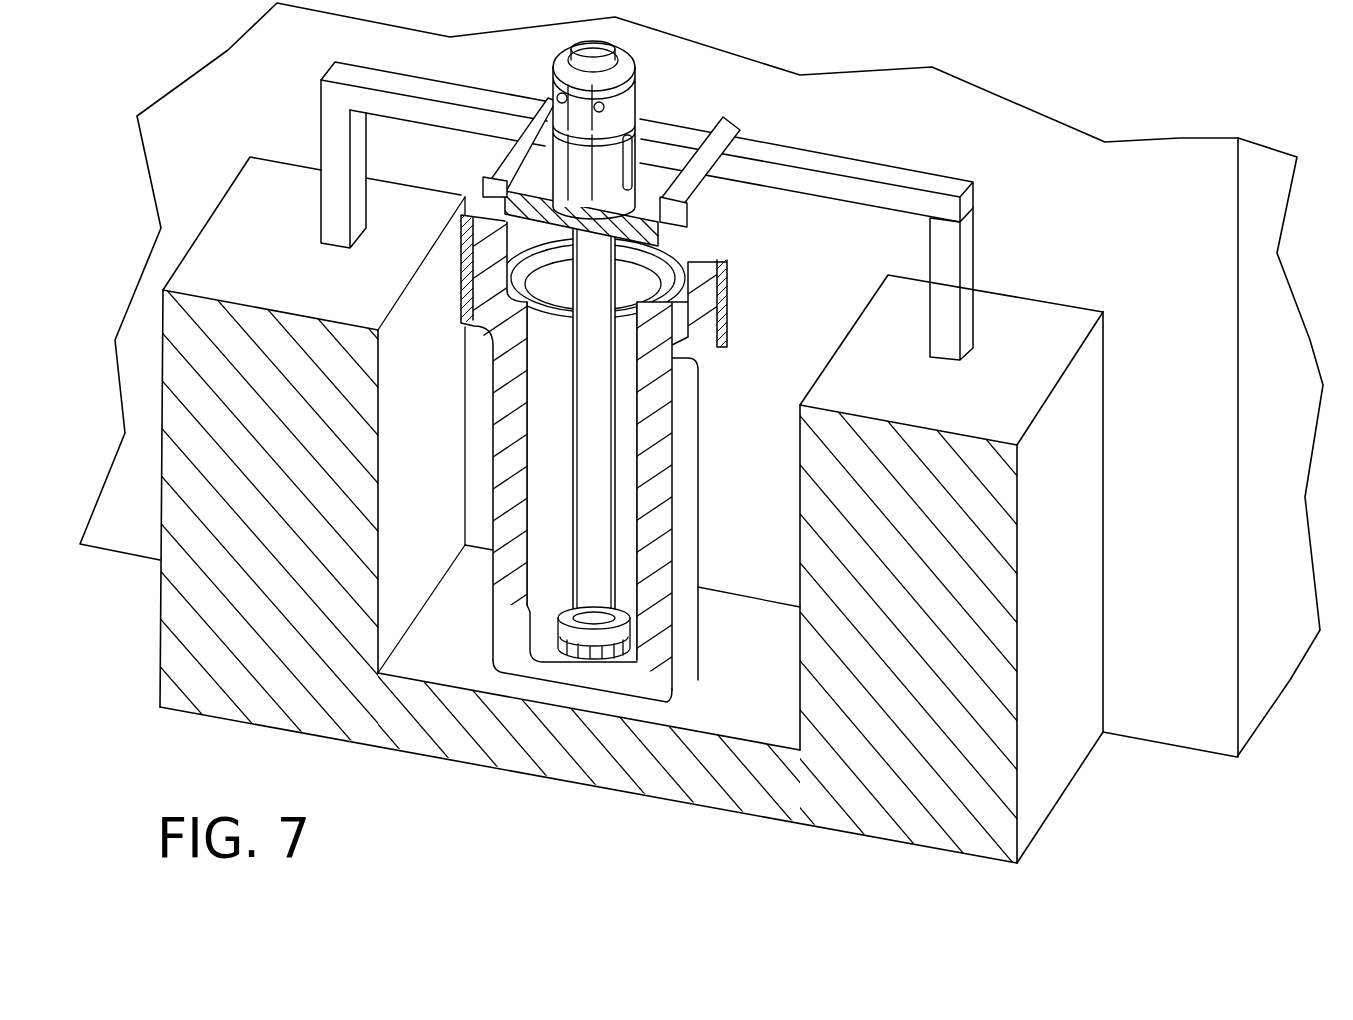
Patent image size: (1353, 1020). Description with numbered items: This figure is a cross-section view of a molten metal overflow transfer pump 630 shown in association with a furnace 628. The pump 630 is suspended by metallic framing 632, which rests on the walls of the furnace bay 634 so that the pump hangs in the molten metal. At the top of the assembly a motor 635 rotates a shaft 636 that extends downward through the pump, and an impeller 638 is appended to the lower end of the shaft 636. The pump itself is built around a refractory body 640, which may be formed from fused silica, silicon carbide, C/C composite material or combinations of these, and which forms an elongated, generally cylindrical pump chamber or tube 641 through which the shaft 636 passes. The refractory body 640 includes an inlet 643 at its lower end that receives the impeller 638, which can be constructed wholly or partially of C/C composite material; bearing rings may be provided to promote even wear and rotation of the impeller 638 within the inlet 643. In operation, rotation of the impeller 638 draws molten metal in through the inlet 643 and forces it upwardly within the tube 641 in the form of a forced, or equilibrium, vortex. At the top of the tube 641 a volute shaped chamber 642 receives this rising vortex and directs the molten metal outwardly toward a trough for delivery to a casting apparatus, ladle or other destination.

The furnace 628 is at (1127, 227).
The molten metal overflow transfer pump 630 is at (712, 417).
The metallic framing 632 is at (815, 160).
The furnace bay 634 is at (288, 505).
The motor 635 is at (623, 87).
The shaft 636 is at (590, 495).
The impeller 638 is at (562, 625).
The refractory body 640 is at (655, 540).
The pump chamber or tube 641 is at (552, 435).
The volute shaped chamber 642 is at (530, 241).
The inlet 643 is at (580, 660).